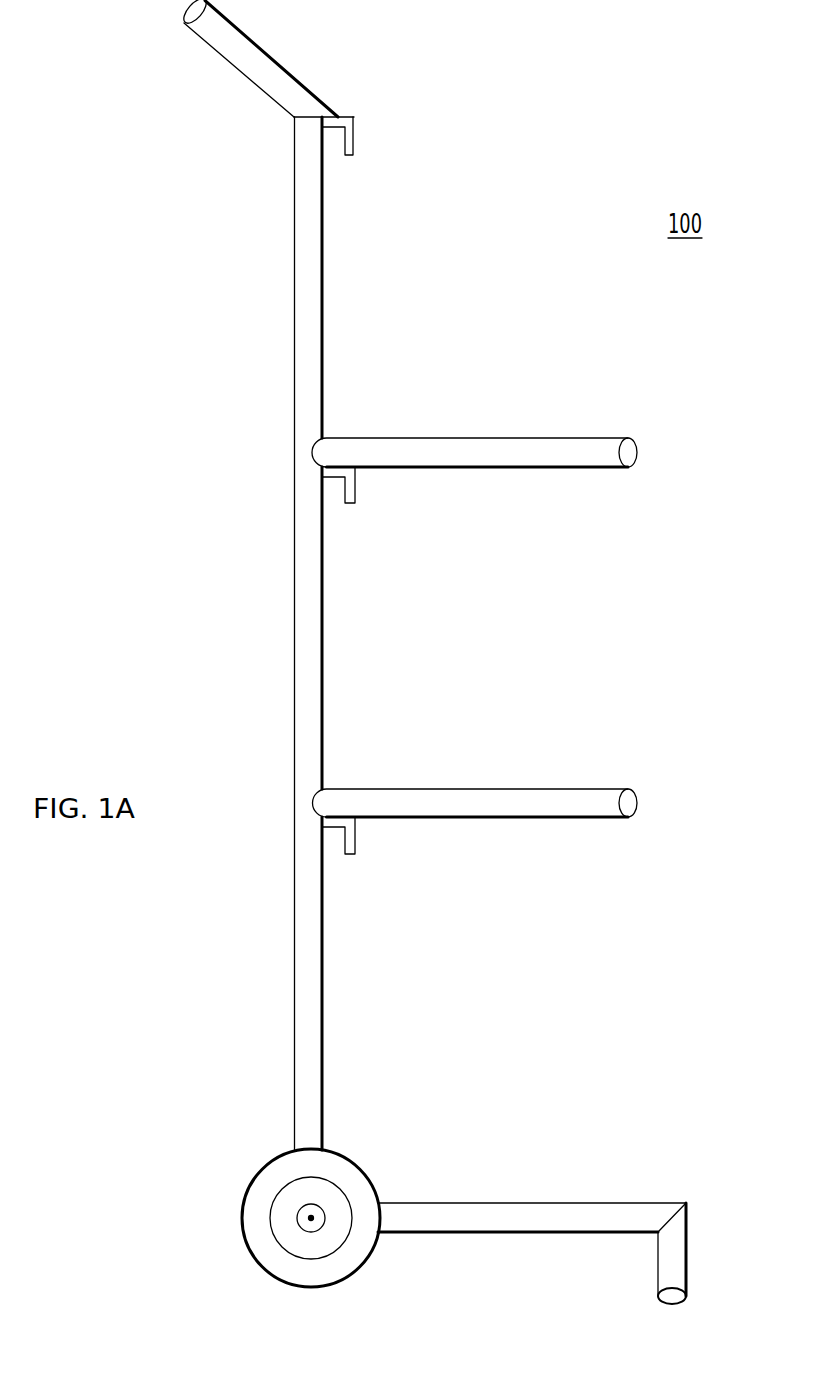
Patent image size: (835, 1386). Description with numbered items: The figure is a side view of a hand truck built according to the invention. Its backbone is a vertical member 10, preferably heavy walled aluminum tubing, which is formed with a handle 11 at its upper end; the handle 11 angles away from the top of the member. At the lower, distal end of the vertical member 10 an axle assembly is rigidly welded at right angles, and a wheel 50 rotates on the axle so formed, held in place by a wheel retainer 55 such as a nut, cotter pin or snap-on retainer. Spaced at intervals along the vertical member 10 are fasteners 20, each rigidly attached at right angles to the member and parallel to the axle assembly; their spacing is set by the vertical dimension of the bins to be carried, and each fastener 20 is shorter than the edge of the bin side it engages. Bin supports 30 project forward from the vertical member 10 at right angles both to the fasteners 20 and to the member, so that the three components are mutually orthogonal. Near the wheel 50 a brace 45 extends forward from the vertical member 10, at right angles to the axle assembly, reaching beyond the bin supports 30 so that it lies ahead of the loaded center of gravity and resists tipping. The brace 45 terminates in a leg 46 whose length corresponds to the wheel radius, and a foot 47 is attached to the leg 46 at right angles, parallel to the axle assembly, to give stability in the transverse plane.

The vertical member 10 is at (335, 274).
The handle 11 is at (282, 47).
The fastener 20 is at (367, 142).
The bin support 30 is at (648, 441).
The brace 45 is at (588, 1192).
The leg 46 is at (688, 1240).
The foot 47 is at (699, 1305).
The wheel 50 is at (371, 1160).
The wheel retainer 55 is at (307, 1245).